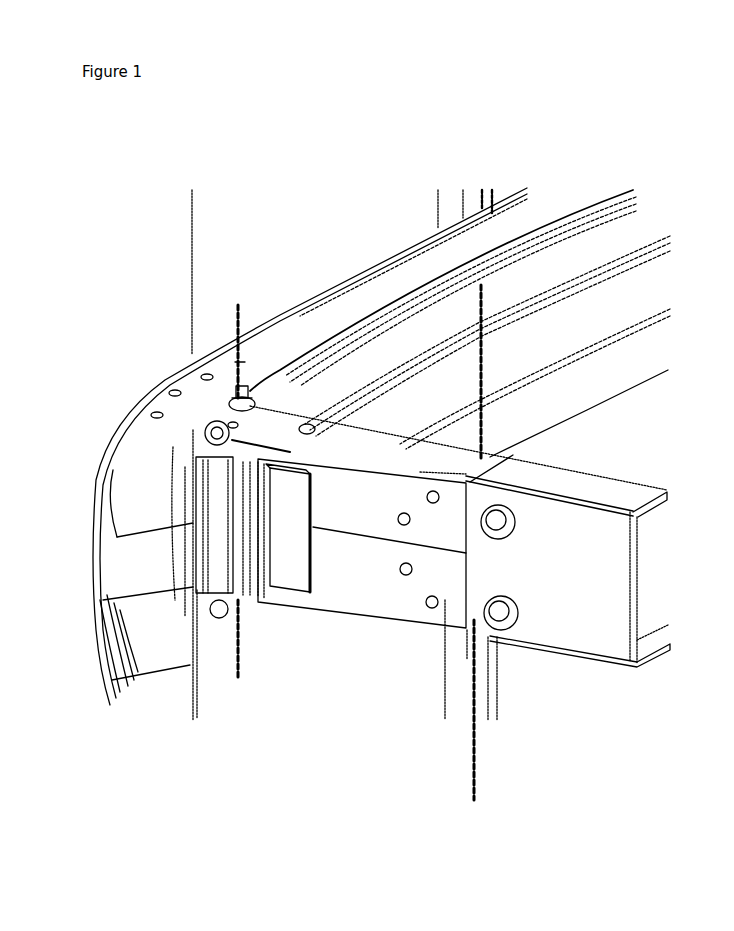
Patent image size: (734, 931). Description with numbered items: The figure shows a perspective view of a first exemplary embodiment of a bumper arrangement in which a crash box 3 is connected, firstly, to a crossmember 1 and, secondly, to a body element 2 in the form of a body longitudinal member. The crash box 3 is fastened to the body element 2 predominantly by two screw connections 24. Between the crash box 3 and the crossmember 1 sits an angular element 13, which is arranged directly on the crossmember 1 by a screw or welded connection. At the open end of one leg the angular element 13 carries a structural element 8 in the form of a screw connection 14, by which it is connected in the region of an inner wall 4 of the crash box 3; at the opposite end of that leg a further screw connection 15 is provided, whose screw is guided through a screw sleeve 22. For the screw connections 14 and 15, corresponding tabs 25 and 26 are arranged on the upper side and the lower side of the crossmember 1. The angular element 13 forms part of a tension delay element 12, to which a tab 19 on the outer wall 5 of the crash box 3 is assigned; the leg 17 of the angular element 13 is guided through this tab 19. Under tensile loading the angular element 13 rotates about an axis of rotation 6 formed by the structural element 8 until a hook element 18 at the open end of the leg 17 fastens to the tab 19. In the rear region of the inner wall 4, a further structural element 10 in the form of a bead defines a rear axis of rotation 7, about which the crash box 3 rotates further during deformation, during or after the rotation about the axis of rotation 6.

The crossmember 1 is at (427, 250).
The body element 2 is at (595, 580).
The crash box 3 is at (360, 644).
The inner wall 4 is at (427, 442).
The outer wall 5 is at (382, 570).
The axis of rotation 6 is at (242, 357).
The rear axis of rotation 7 is at (485, 360).
The structural element 8 is at (247, 388).
The further structural element 10 is at (490, 455).
The tension delay element 12 is at (265, 616).
The angular element 13 is at (265, 620).
The screw connection 14 is at (247, 388).
The further screw connection 15 is at (220, 433).
The leg 17 is at (272, 540).
The hook element 18 is at (290, 507).
The tab 19 is at (243, 467).
The screw sleeve 22 is at (210, 530).
The screw connections 24 is at (490, 525).
The tab 25 is at (237, 423).
The tab 26 is at (205, 598).